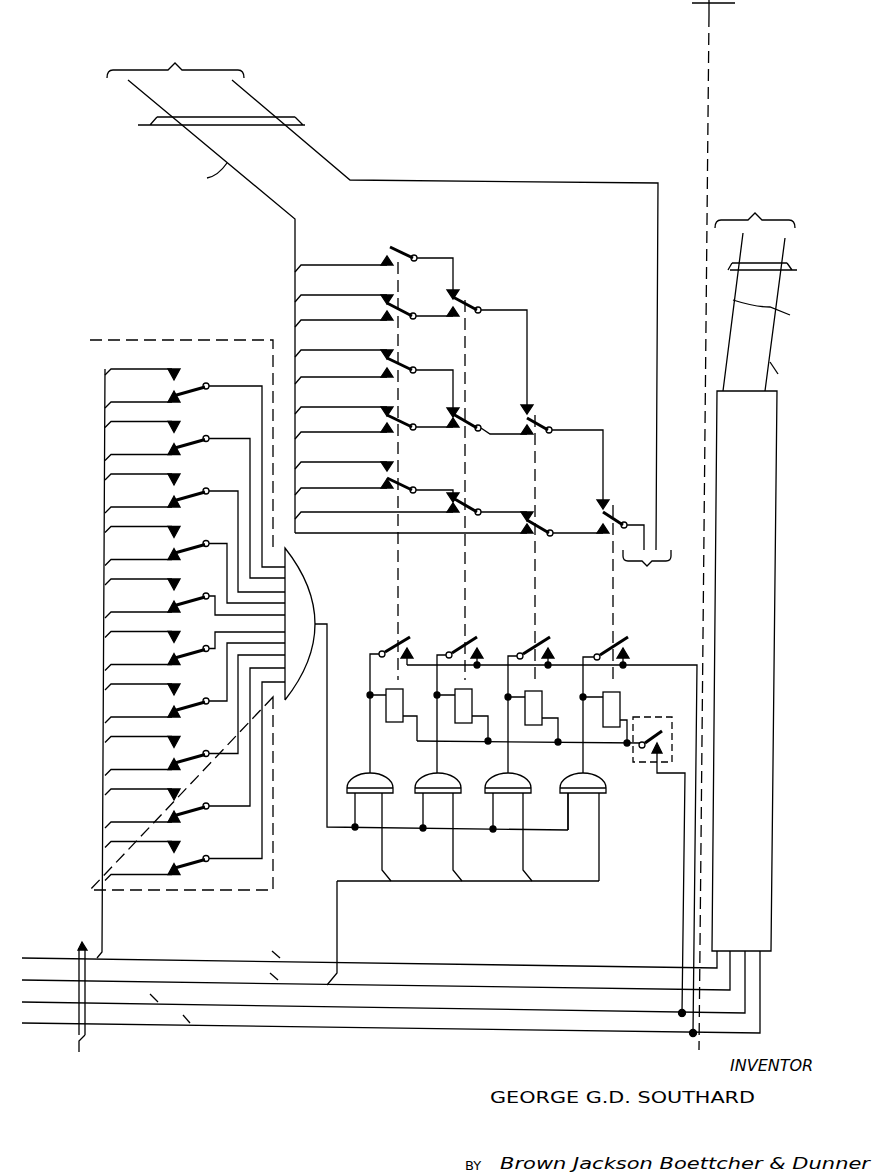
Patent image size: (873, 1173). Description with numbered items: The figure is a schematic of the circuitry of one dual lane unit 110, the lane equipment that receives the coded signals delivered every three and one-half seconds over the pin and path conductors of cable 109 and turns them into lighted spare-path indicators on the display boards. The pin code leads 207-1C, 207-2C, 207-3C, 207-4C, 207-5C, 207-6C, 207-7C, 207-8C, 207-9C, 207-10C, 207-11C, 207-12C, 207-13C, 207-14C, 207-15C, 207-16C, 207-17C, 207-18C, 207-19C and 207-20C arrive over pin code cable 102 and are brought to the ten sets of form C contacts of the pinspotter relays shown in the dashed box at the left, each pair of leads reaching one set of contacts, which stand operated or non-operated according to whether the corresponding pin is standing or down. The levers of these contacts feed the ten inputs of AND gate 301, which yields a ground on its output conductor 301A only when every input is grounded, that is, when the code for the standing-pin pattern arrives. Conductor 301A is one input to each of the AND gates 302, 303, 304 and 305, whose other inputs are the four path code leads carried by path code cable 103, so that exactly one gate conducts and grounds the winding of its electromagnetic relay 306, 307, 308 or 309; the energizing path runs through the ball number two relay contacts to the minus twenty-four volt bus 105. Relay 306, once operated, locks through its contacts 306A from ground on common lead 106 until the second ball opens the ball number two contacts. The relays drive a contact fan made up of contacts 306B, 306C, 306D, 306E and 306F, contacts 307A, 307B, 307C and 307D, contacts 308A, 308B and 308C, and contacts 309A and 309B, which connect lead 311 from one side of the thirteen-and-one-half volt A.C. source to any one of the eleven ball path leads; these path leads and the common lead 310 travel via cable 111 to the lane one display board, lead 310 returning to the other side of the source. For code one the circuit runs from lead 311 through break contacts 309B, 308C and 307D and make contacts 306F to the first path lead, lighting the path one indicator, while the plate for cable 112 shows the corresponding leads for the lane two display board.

The pin code cable 102 is at (62, 958).
The path code cable 103 is at (62, 980).
The power lead (−24 v. bus) 105 is at (62, 1002).
The common lead 106 is at (62, 1023).
The cable 109 is at (77, 1009).
The dual lane unit 110 is at (431, 575).
The cable 111 is at (210, 125).
The cable 112 is at (774, 270).
The AND gate 301 is at (306, 579).
The output conductor 301A is at (330, 621).
The AND gate 302 is at (360, 782).
The AND gate 303 is at (427, 782).
The AND gate 304 is at (497, 782).
The AND gate 305 is at (567, 782).
The electromagnetic relay 306 is at (399, 715).
The relay 307 is at (468, 715).
The relay 308 is at (538, 716).
The relay 309 is at (615, 716).
The locking contacts of relay 306 306A is at (384, 702).
The relay 306 contact 306B is at (417, 477).
The relay 306 contact 306C is at (417, 419).
The relay 306 contact 306D is at (417, 379).
The relay 306 contact 306E is at (417, 307).
The make contacts of relay 306 306F is at (417, 264).
The relay 307 contact 307A is at (455, 702).
The relay 307 contact 307B is at (487, 502).
The relay 307 contact 307C is at (487, 419).
The break contacts of relay 307 307D is at (487, 347).
The relay 308 contact 308A is at (526, 702).
The relay 308 contact 308B is at (562, 523).
The break contacts of relay 308 308C is at (562, 452).
The relay 309 contact 309A is at (600, 702).
The break contacts of relay 309 309B is at (617, 516).
The common lead 310 is at (331, 156).
The lead 311 is at (650, 541).
The pin code lead 207-1C is at (142, 365).
The pin code lead 207-2C is at (195, 466).
The pin code lead 207-3C is at (142, 418).
The pin code lead 207-4C is at (195, 499).
The pin code lead 207-5C is at (142, 470).
The pin code lead 207-6C is at (195, 531).
The pin code lead 207-7C is at (142, 523).
The pin code lead 207-8C is at (195, 564).
The pin code lead 207-9C is at (142, 575).
The pin code lead 207-10C is at (195, 597).
The pin code lead 207-11C is at (142, 628).
The pin code lead 207-12C is at (195, 650).
The pin code lead 207-13C is at (142, 680).
The pin code lead 207-14C is at (195, 683).
The pin code lead 207-15C is at (142, 733).
The pin code lead 207-16C is at (195, 715).
The pin code lead 207-17C is at (142, 785).
The pin code lead 207-18C is at (195, 748).
The pin code lead 207-19C is at (142, 838).
The pin code lead 207-20C is at (195, 781).